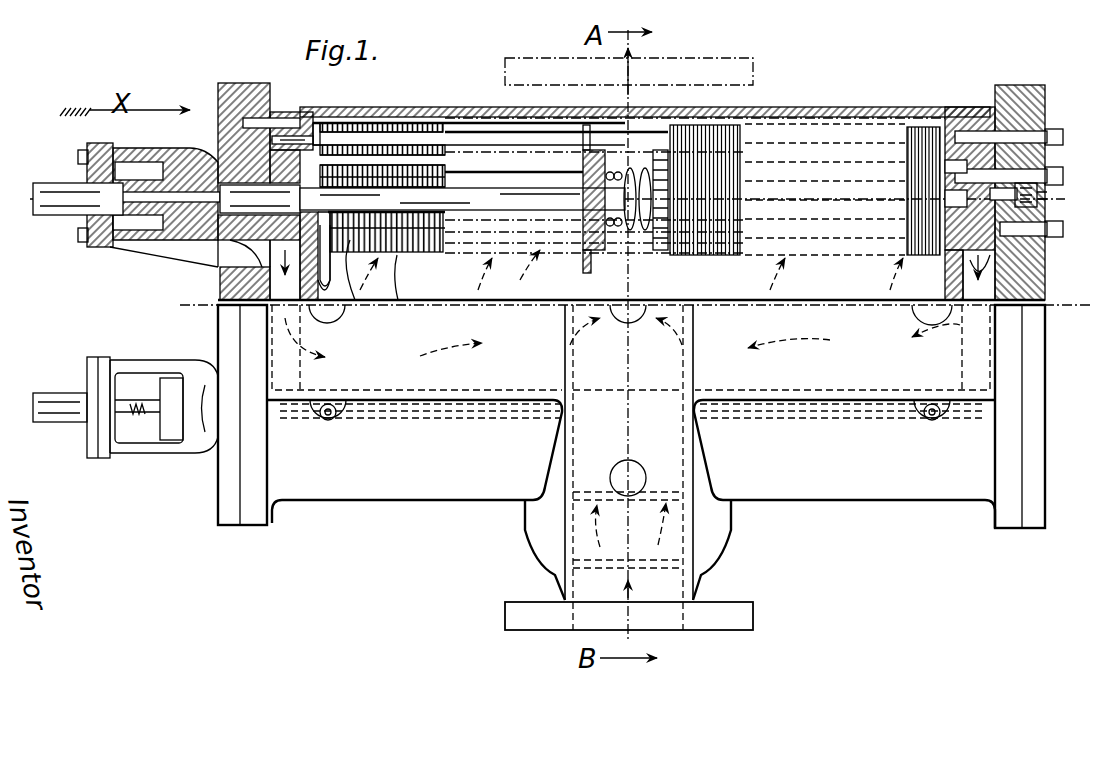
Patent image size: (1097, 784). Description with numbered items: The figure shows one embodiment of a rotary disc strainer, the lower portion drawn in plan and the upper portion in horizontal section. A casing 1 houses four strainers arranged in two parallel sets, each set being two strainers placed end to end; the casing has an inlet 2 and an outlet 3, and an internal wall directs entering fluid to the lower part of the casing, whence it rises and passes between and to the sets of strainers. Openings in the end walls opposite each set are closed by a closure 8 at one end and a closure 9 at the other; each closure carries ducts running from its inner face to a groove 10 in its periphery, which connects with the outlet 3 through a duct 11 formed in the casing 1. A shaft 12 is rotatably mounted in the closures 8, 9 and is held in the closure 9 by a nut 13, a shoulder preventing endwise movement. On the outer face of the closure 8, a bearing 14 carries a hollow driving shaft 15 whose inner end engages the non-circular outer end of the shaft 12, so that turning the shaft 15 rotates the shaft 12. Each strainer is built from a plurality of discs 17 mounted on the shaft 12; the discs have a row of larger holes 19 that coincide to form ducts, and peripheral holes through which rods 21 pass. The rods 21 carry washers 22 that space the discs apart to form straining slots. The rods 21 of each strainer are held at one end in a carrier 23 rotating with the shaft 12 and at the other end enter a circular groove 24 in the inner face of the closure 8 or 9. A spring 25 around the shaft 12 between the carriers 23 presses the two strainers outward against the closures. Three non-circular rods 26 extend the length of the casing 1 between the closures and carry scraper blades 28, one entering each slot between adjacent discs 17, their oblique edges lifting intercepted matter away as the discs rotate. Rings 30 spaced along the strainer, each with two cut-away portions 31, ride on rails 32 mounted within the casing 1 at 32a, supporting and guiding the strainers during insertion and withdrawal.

The casing 1 is at (848, 107).
The inlet 2 is at (665, 613).
The outlet 3 is at (693, 100).
The closure 8 is at (218, 280).
The closure 9 is at (1027, 107).
The groove 10 is at (323, 263).
The duct 11 is at (352, 305).
The shaft 12 is at (487, 195).
The nut 13 is at (1037, 206).
The bearing 14 is at (87, 233).
The shaft 15 is at (152, 185).
The discs 17 is at (712, 147).
The holes 19 is at (415, 232).
The rods 21 is at (507, 163).
The washers 22 is at (470, 190).
The carrier 23 is at (590, 272).
The circular groove 24 is at (307, 175).
The spring 25 is at (632, 233).
The rods 26 is at (545, 137).
The scraper blades 28 is at (373, 123).
The rings 30 is at (398, 257).
The cut-away portions 31 is at (672, 208).
The rails 32 is at (472, 404).
The rail mounting 32a is at (335, 420).